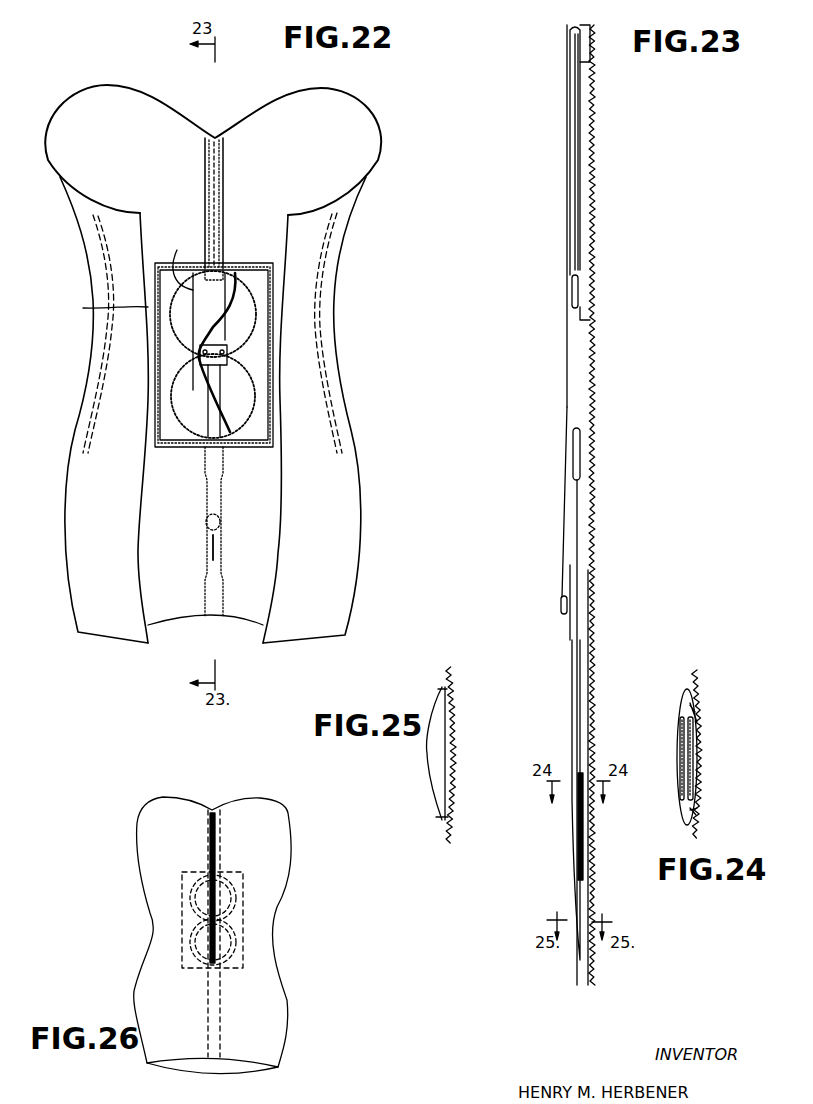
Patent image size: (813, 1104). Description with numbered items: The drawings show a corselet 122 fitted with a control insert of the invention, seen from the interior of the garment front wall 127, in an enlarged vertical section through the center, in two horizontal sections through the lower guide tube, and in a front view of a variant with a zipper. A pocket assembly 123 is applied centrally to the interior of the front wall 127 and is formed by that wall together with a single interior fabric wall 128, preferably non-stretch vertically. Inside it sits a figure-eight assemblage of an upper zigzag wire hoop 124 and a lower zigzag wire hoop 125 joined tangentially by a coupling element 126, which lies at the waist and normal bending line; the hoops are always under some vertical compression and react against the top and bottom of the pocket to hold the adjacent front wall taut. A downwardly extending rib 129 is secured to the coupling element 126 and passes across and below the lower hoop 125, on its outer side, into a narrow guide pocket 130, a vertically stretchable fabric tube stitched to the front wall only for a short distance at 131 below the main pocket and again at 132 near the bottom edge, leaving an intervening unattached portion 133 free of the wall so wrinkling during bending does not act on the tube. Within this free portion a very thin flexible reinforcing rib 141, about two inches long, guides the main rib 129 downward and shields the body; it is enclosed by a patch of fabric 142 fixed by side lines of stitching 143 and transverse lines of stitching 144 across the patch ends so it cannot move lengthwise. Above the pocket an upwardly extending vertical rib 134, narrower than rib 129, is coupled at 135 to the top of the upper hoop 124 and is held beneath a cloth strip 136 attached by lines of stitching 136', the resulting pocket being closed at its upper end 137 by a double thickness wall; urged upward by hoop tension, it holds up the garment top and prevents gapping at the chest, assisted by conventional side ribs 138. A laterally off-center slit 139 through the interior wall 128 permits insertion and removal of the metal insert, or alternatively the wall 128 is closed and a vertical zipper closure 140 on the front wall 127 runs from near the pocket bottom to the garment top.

In FIG. 22, the corselet 122 is at (338, 287).
In FIG. 26, the corselet 122 is at (288, 987).
In FIG. 22, the pocket assembly 123 is at (278, 347).
In FIG. 23, the pocket assembly 123 is at (562, 395).
In FIG. 26, the pocket assembly 123 is at (250, 913).
In FIG. 22, the upper zigzag wire hoop 124 is at (243, 280).
In FIG. 26, the upper zigzag wire hoop 124 is at (190, 903).
In FIG. 22, the lower zigzag wire hoop 125 is at (233, 427).
In FIG. 23, the lower zigzag wire hoop 125 is at (562, 602).
In FIG. 26, the lower zigzag wire hoop 125 is at (192, 948).
In FIG. 22, the coupling element 126 is at (225, 362).
In FIG. 23, the coupling element 126 is at (573, 443).
In FIG. 22, the garment front wall 127 is at (269, 227).
In FIG. 23, the garment front wall 127 is at (593, 398).
In FIG. 24, the garment front wall 127 is at (700, 715).
In FIG. 25, the garment front wall 127 is at (457, 785).
In FIG. 26, the garment front wall 127 is at (272, 870).
In FIG. 22, the interior pocket wall 128 is at (170, 428).
In FIG. 23, the interior pocket wall 128 is at (567, 337).
In FIG. 22, the downwardly extending rib 129 is at (213, 383).
In FIG. 23, the downwardly extending rib 129 is at (580, 557).
In FIG. 24, the downwardly extending rib 129 is at (682, 757).
In FIG. 22, the narrow guide pocket 130 is at (226, 532).
In FIG. 23, the narrow guide pocket 130 is at (562, 840).
In FIG. 24, the narrow guide pocket 130 is at (677, 732).
In FIG. 25, the narrow guide pocket 130 is at (425, 762).
In FIG. 22, the stitching 131 is at (223, 457).
In FIG. 22, the stitching 132 is at (223, 603).
In FIG. 22, the intervening unattached portion of the guide tube 133 is at (203, 522).
In FIG. 22, the upwardly extending vertical rib 134 is at (217, 187).
In FIG. 23, the upwardly extending vertical rib 134 is at (577, 190).
In FIG. 22, the coupling of rib to upper hoop 135 is at (225, 272).
In FIG. 23, the coupling of rib to upper hoop 135 is at (572, 282).
In FIG. 22, the cloth strip 136 is at (194, 202).
In FIG. 23, the cloth strip 136 is at (554, 150).
In FIG. 22, the lines of stitching 136' is at (220, 193).
In FIG. 22, the upper end of pocket 137 is at (220, 138).
In FIG. 23, the upper end of pocket 137 is at (572, 18).
In FIG. 22, the side ribs 138 is at (105, 353).
In FIG. 22, the slit 139 is at (171, 263).
In FIG. 26, the vertical zipper closure 140 is at (210, 833).
In FIG. 22, the thin flexible reinforcing rib 141 is at (203, 537).
In FIG. 23, the thin flexible reinforcing rib 141 is at (582, 850).
In FIG. 24, the thin flexible reinforcing rib 141 is at (692, 760).
In FIG. 23, the patch of fabric 142 is at (580, 823).
In FIG. 24, the patch of fabric 142 is at (685, 802).
In FIG. 24, the side lines of stitching 143 is at (698, 722).
In FIG. 23, the transverse lines of stitching 144 is at (587, 763).